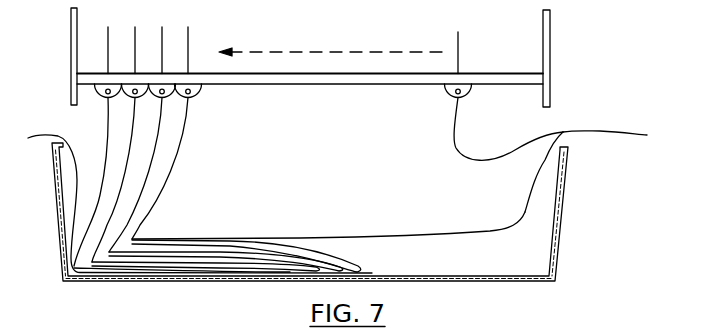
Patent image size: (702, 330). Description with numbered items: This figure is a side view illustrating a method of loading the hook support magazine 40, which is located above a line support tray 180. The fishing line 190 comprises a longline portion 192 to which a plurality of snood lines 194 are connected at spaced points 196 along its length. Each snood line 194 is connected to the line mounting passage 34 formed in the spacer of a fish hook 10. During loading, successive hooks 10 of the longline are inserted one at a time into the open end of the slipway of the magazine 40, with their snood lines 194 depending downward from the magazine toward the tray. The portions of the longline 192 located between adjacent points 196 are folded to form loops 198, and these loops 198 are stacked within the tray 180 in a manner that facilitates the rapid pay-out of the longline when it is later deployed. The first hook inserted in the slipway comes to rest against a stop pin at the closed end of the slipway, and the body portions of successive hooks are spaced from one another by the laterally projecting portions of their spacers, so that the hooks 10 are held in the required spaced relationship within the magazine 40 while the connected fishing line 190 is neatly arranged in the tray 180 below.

The fish hook 10 is at (201, 97).
The line mounting passage 34 is at (463, 94).
The hook support magazine 40 is at (557, 40).
The line support tray 180 is at (565, 202).
The fishing line 190 is at (531, 187).
The longline portion 192 is at (522, 213).
The snood lines 194 is at (107, 152).
The spaced points 196 is at (596, 134).
The loops 198 is at (142, 271).